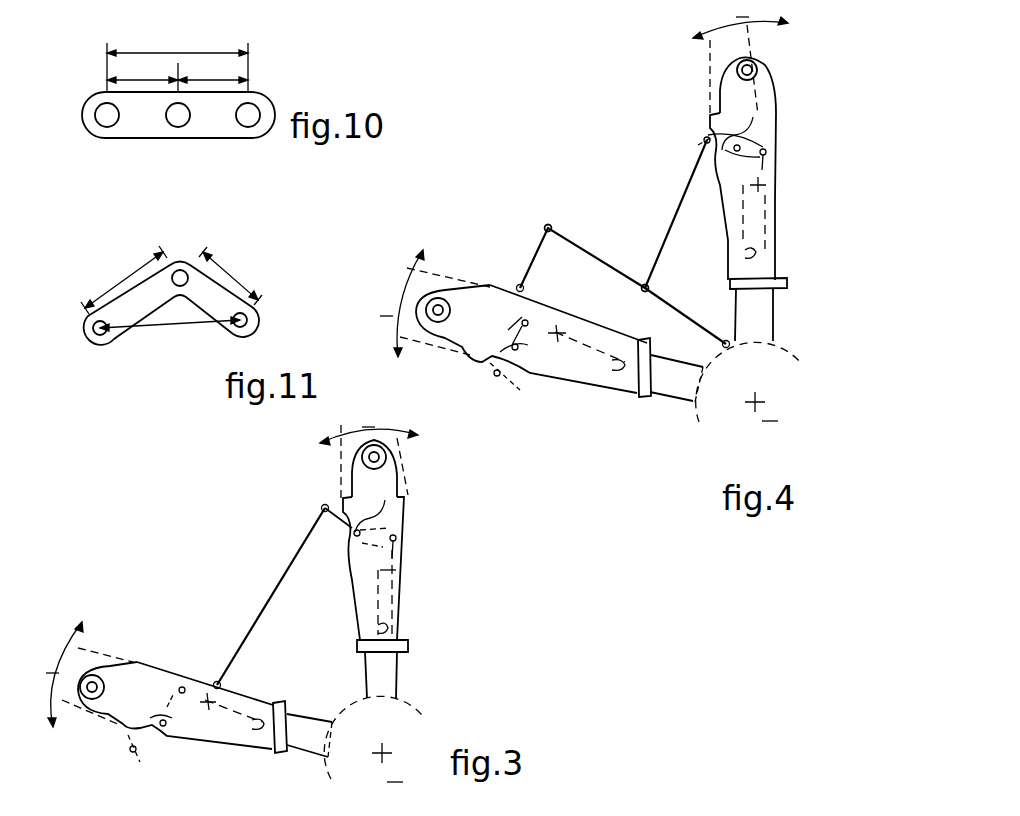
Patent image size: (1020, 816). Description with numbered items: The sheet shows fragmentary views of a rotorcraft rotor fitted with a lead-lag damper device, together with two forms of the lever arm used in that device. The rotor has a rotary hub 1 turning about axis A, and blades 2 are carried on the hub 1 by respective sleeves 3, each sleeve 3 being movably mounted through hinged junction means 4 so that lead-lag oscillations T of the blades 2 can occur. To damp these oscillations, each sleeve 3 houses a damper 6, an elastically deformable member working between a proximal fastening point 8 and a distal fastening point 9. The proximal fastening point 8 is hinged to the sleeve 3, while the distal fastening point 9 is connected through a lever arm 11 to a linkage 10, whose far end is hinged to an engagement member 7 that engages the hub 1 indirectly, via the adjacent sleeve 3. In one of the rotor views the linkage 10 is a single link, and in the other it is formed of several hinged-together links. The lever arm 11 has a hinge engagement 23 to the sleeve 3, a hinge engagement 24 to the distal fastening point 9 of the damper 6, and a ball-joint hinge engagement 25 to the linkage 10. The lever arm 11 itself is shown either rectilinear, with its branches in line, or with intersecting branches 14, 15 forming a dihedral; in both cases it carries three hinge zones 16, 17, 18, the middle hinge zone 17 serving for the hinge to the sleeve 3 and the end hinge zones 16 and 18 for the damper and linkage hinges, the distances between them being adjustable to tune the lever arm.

In FIG. 4, the rotary hub 1 is at (695, 428).
In FIG. 3, the rotary hub 1 is at (424, 712).
In FIG. 4, the blade 2 is at (708, 62).
In FIG. 3, the blade 2 is at (340, 466).
In FIG. 4, the sleeve 3 is at (778, 118).
In FIG. 3, the sleeve 3 is at (405, 508).
In FIG. 4, the hinged junction means 4 is at (773, 317).
In FIG. 3, the hinged junction means 4 is at (365, 672).
In FIG. 4, the damper 6 is at (766, 210).
In FIG. 3, the damper 6 is at (400, 598).
In FIG. 4, the engagement member 7 is at (724, 340).
In FIG. 3, the engagement member 7 is at (217, 682).
In FIG. 4, the proximal fastening point 8 is at (762, 252).
In FIG. 3, the proximal fastening point 8 is at (393, 624).
In FIG. 4, the distal fastening point 9 is at (621, 328).
In FIG. 3, the distal fastening point 9 is at (331, 658).
In FIG. 4, the linkage 10 is at (617, 170).
In FIG. 3, the linkage 10 is at (268, 600).
In FIG. 10, the lever arm 11 is at (268, 93).
In FIG. 11, the lever arm 11 is at (215, 343).
In FIG. 4, the lever arm 11 is at (740, 130).
In FIG. 3, the lever arm 11 is at (348, 540).
In FIG. 11, the branch 14 is at (255, 330).
In FIG. 11, the branch 15 is at (92, 340).
In FIG. 10, the hinge zone 16 is at (107, 127).
In FIG. 11, the hinge zone 16 is at (110, 335).
In FIG. 10, the middle hinge zone 17 is at (178, 127).
In FIG. 11, the middle hinge zone 17 is at (180, 270).
In FIG. 10, the hinge zone 18 is at (248, 127).
In FIG. 11, the hinge zone 18 is at (257, 313).
In FIG. 4, the hinge engagement 23 is at (763, 150).
In FIG. 3, the hinge engagement 23 is at (392, 535).
In FIG. 4, the hinge engagement 24 is at (728, 220).
In FIG. 3, the hinge engagement 24 is at (397, 543).
In FIG. 4, the hinge engagement 25 is at (707, 137).
In FIG. 3, the hinge engagement 25 is at (322, 509).